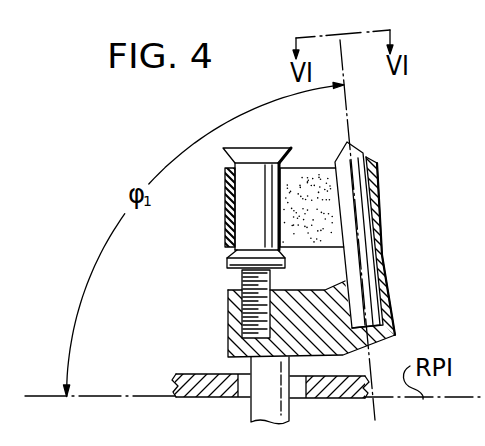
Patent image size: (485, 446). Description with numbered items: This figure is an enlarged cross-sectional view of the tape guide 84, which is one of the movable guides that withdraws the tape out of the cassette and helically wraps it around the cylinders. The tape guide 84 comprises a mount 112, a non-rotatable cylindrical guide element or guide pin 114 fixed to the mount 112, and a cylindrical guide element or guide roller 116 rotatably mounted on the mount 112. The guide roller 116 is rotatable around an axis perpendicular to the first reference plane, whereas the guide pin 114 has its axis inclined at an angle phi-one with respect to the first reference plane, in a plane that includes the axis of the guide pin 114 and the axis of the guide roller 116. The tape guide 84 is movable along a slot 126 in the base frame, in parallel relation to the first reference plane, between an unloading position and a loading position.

The tape guide 84 is at (204, 324).
The mount 112 is at (228, 303).
The guide pin 114 is at (356, 148).
The guide roller 116 is at (255, 148).
The slot 126 is at (237, 389).